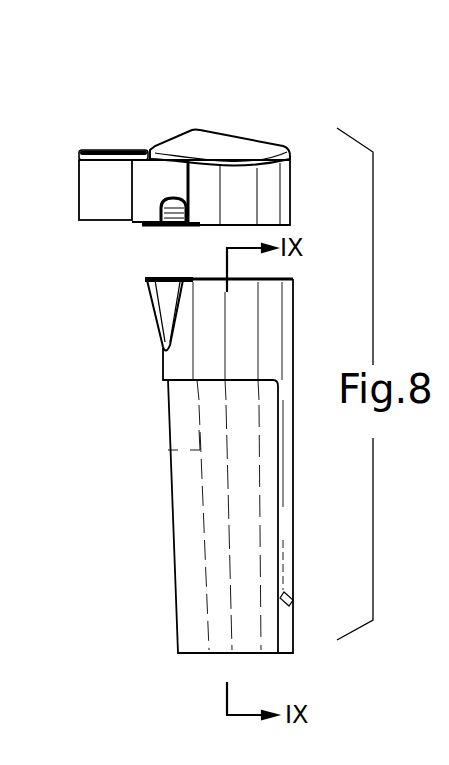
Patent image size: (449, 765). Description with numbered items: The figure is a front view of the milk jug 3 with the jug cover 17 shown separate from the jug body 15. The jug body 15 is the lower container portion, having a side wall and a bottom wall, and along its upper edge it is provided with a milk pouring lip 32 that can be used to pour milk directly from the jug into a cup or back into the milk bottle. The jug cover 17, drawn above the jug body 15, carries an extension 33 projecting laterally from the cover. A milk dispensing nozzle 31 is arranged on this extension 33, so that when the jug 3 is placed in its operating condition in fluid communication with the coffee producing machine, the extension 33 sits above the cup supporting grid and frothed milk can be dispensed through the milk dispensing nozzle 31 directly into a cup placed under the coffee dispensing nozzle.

The milk jug 3 is at (75, 602).
The jug body 15 is at (300, 495).
The jug cover 17 is at (247, 131).
The milk dispensing nozzle 31 is at (107, 222).
The milk pouring lip 32 is at (170, 300).
The extension 33 is at (95, 170).